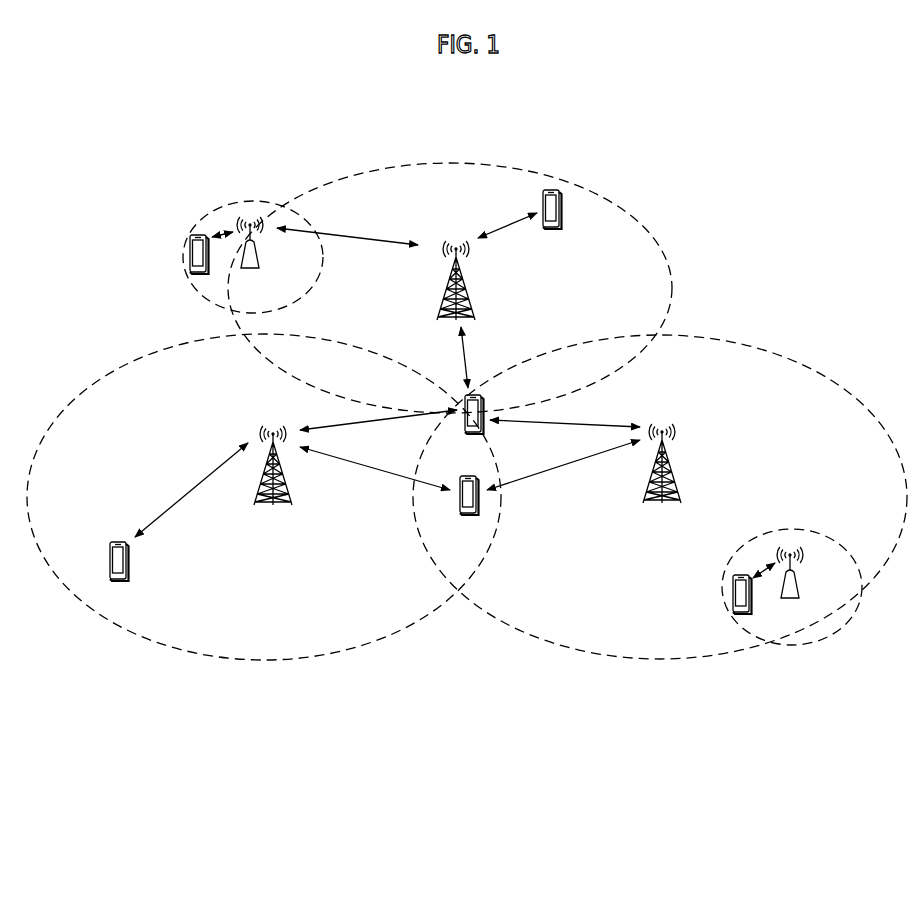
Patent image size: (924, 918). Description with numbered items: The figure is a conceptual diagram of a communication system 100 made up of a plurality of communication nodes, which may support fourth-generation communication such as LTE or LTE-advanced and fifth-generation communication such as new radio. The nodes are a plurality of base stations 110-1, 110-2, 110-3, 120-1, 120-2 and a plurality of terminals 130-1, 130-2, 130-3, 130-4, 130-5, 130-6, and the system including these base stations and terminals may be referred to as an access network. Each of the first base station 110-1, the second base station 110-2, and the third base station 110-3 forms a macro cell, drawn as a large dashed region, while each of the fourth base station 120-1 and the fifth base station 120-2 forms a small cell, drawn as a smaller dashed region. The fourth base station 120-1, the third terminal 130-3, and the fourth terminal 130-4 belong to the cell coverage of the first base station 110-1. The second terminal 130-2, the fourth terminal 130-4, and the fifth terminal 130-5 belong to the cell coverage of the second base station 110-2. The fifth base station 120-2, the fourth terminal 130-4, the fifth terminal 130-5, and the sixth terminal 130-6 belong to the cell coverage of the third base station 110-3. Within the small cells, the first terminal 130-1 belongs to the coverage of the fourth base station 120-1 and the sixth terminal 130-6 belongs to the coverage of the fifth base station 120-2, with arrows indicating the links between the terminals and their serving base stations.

The communication system 100 is at (461, 140).
The first base station 110-1 is at (465, 288).
The second base station 110-2 is at (273, 507).
The third base station 110-3 is at (673, 470).
The fourth base station 120-1 is at (260, 258).
The fifth base station 120-2 is at (801, 580).
The first terminal 130-1 is at (190, 252).
The second terminal 130-2 is at (128, 560).
The third terminal 130-3 is at (561, 212).
The fourth terminal 130-4 is at (484, 398).
The fifth terminal 130-5 is at (473, 475).
The sixth terminal 130-6 is at (732, 592).